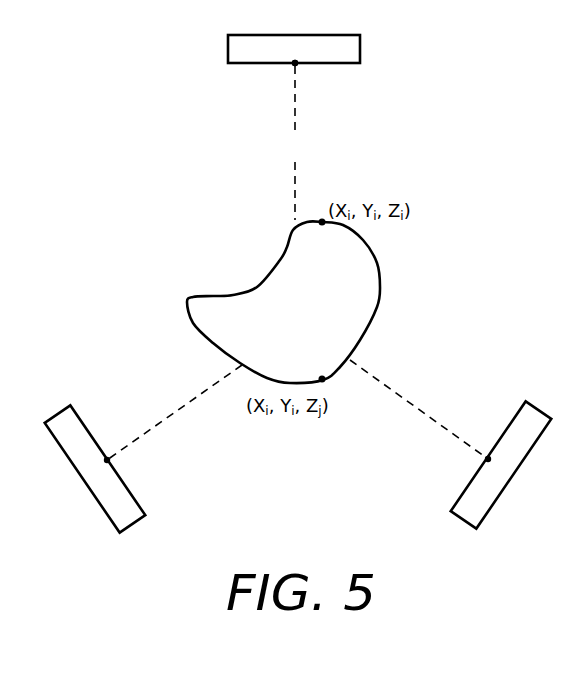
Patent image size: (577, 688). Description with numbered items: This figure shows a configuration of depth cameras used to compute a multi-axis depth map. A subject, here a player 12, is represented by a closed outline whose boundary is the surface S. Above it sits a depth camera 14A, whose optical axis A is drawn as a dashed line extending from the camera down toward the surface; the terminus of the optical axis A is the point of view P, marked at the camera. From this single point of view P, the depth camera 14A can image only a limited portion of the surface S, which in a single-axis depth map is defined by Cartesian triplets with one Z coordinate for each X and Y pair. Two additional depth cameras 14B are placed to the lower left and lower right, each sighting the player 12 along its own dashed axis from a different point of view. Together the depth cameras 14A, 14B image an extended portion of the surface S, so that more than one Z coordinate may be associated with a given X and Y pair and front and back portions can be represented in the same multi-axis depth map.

The depth camera 14A is at (294, 50).
The additional depth camera 14B is at (298, 446).
The player 12 is at (275, 314).
The point of view P is at (302, 76).
The optical axis A is at (294, 143).
The surface S is at (189, 291).